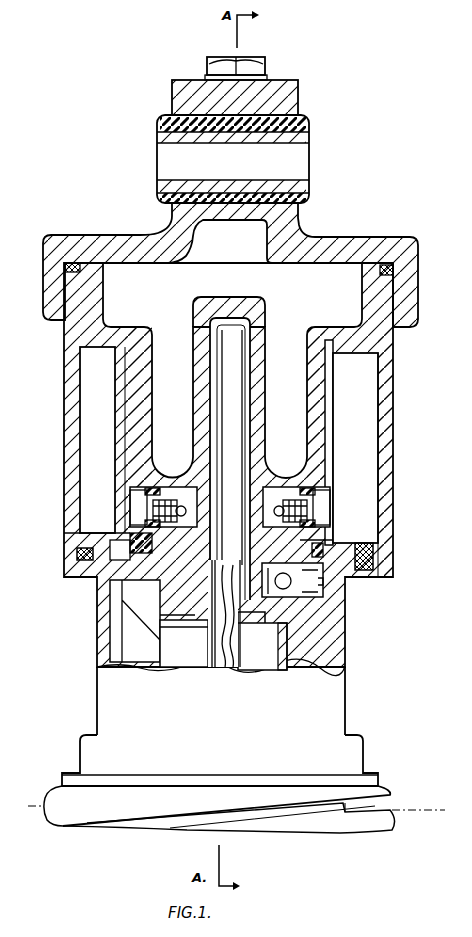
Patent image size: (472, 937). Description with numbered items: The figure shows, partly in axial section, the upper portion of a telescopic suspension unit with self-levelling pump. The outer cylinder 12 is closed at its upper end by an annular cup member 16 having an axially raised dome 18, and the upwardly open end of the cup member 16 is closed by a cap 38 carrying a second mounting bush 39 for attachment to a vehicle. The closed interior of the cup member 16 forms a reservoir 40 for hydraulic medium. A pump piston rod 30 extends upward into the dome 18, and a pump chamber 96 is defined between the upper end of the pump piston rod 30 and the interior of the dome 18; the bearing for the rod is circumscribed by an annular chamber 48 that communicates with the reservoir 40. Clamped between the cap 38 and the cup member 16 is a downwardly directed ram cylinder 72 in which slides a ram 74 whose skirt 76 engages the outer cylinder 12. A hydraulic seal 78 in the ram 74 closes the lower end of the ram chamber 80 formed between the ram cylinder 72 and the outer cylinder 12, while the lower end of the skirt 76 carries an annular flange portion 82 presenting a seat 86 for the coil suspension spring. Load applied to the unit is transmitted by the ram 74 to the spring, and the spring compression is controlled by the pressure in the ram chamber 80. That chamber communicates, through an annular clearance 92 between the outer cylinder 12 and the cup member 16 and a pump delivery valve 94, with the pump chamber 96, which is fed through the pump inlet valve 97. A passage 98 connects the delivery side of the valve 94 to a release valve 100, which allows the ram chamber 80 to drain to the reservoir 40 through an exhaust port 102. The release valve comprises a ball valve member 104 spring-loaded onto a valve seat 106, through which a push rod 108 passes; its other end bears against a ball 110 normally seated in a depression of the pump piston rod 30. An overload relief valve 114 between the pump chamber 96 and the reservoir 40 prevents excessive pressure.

The outer cylinder 12 is at (262, 646).
The annular cup member 16 is at (127, 427).
The dome 18 is at (190, 427).
The pump piston rod 30 is at (212, 350).
The cap 38 is at (363, 252).
The second mounting bush 39 is at (297, 95).
The reservoir 40 is at (232, 370).
The annular chamber 48 is at (251, 628).
The ram cylinder 72 is at (388, 439).
The ram 74 is at (357, 548).
The skirt 76 is at (100, 640).
The hydraulic seal 78 is at (372, 565).
The ram chamber 80 is at (363, 382).
The annular flange portion 82 is at (352, 757).
The seat 86 is at (63, 788).
The annular clearance 92 is at (325, 470).
The pump delivery valve 94 is at (145, 478).
The pump chamber 96 is at (248, 428).
The pump inlet valve 97 is at (323, 585).
The passage 98 is at (115, 556).
The release valve 100 is at (105, 582).
The exhaust port 102 is at (135, 621).
The ball valve member 104 is at (112, 552).
The valve seat 106 is at (184, 643).
The push rod 108 is at (184, 637).
The ball 110 is at (223, 621).
The overload relief valve 114 is at (318, 505).